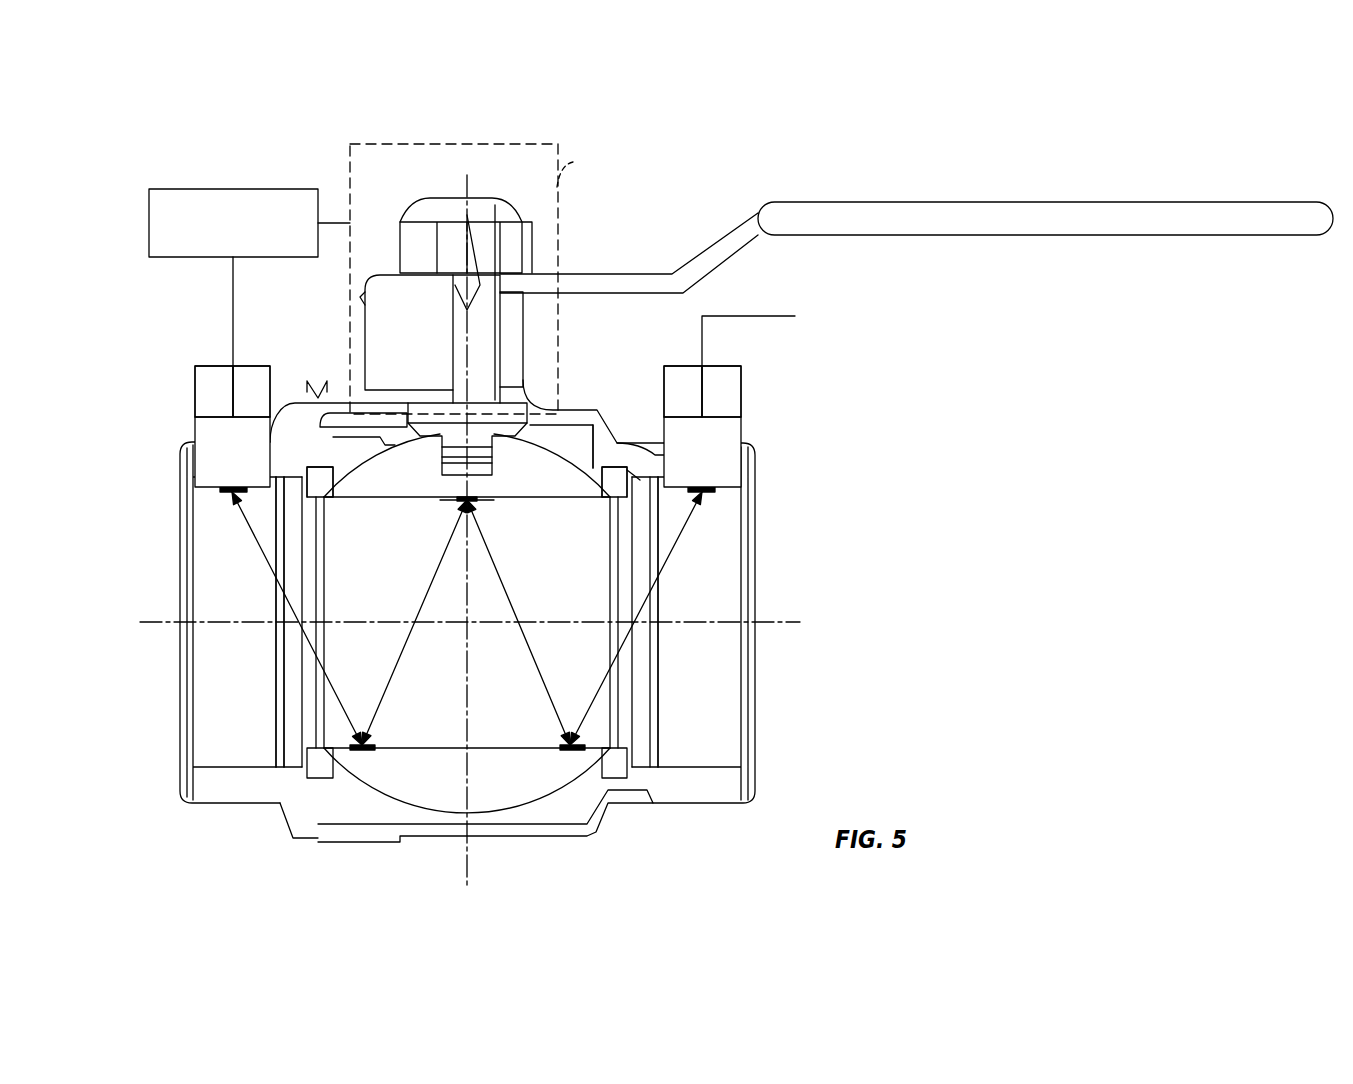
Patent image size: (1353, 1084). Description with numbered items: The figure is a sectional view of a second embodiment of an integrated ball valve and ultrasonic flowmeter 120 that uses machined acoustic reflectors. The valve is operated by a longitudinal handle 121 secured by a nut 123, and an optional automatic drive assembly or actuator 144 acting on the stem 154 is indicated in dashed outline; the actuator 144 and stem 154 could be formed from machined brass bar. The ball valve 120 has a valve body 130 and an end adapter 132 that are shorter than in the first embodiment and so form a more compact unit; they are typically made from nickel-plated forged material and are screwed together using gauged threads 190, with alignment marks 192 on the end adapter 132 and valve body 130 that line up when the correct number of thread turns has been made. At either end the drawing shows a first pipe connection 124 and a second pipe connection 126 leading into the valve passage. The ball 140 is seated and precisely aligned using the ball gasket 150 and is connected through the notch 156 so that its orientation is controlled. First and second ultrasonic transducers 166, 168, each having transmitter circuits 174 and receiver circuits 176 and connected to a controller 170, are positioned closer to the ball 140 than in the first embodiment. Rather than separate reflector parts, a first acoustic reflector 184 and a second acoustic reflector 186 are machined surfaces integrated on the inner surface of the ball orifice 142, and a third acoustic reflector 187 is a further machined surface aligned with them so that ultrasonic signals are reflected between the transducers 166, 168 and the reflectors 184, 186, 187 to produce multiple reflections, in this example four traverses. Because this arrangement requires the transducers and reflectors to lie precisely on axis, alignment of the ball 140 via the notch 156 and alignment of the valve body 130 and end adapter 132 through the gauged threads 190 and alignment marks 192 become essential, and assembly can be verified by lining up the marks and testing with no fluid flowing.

The integrated ball valve and ultrasonic flowmeter 120 is at (935, 436).
The longitudinal handle 121 is at (980, 202).
The nut 123 is at (427, 204).
The first pipe 124 is at (183, 558).
The second pipe 126 is at (756, 538).
The valve body 130 is at (678, 797).
The end adapter 132 is at (228, 803).
The ball 140 is at (510, 798).
The ball orifice 142 is at (576, 592).
The actuator 144 is at (582, 250).
The ball gasket 150 is at (622, 460).
The stem 154 is at (485, 385).
The notch 156 is at (608, 495).
The first ultrasonic transducer 166 is at (150, 415).
The second ultrasonic transducer 168 is at (772, 424).
The controller 170 is at (270, 189).
The transmitter circuits 174 is at (200, 375).
The receiver circuits 176 is at (247, 368).
The first acoustic reflector 184 is at (362, 752).
The second acoustic reflector 186 is at (560, 745).
The third acoustic reflector 187 is at (472, 503).
The gauged threads 190 is at (272, 757).
The alignment marks 192 is at (320, 380).